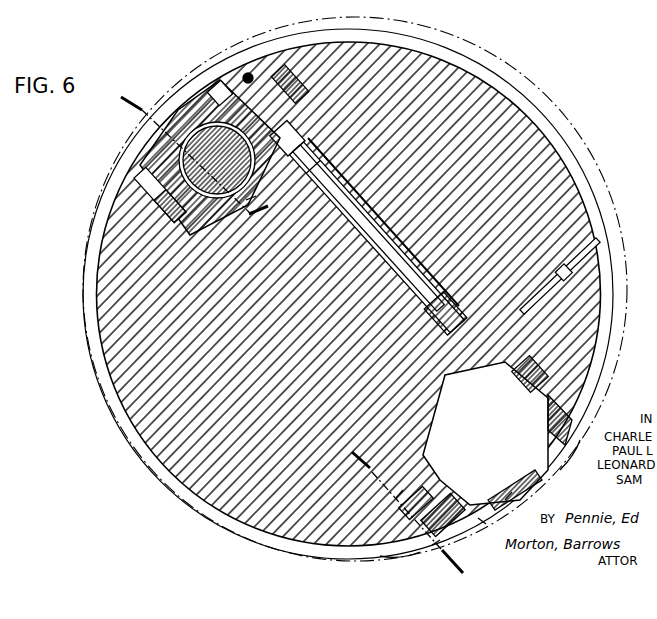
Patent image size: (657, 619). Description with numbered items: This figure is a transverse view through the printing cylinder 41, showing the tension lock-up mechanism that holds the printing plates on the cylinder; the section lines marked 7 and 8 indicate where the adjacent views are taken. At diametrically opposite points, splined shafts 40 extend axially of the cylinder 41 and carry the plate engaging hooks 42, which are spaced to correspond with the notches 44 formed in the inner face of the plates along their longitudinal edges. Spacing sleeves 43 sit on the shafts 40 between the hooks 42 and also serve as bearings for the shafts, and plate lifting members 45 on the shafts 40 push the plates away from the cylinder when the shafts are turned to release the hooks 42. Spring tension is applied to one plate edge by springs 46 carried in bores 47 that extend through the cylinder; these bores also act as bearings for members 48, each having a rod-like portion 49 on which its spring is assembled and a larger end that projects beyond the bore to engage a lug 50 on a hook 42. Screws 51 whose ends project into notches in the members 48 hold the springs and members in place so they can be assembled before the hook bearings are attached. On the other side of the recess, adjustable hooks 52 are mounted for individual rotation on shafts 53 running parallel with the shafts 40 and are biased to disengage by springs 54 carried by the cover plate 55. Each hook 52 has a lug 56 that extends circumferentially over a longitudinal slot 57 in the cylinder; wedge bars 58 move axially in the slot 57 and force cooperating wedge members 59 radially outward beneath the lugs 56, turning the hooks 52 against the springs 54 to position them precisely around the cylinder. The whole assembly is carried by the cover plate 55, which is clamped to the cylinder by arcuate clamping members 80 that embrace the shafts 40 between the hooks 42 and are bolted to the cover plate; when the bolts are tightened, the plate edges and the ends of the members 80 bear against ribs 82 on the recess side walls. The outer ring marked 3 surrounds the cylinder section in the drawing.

The cylindrical housing wall 3 is at (150, 460).
The cylinder 41 is at (592, 207).
The splined shafts 40 is at (227, 177).
The cover plates 55 is at (183, 112).
The arcuate clamping members 80 is at (230, 213).
The ribs 82 is at (262, 107).
The springs 46 is at (458, 300).
The bores 47 is at (366, 272).
The rod-like portions 49 is at (410, 316).
The members 48 is at (466, 308).
The screws 51 is at (558, 272).
The lugs 50 is at (516, 372).
The spacing sleeves 43 is at (452, 398).
The plate engaging hooks 42 is at (545, 425).
The notches 44 is at (575, 456).
The plate lifting members 45 is at (513, 490).
The hooks 52 is at (476, 332).
The shafts 53 is at (482, 520).
The springs 54 is at (460, 490).
The lugs 56 is at (436, 548).
The longitudinal slot 57 is at (396, 498).
The wedge bars 58 is at (416, 514).
The wedge members 59 is at (388, 557).
The section line 7- 7 is at (356, 465).
The section line 8- 8 is at (137, 105).